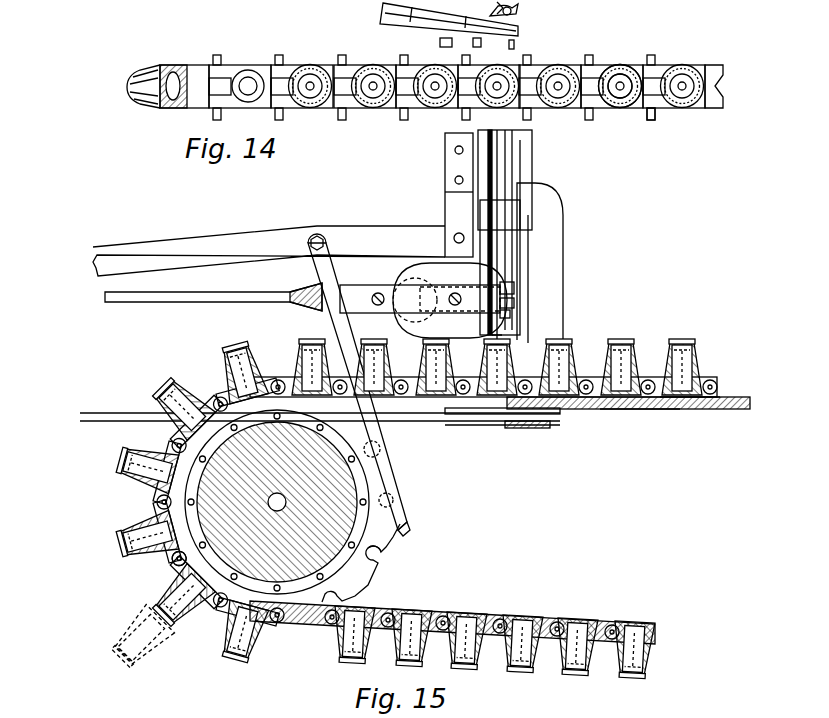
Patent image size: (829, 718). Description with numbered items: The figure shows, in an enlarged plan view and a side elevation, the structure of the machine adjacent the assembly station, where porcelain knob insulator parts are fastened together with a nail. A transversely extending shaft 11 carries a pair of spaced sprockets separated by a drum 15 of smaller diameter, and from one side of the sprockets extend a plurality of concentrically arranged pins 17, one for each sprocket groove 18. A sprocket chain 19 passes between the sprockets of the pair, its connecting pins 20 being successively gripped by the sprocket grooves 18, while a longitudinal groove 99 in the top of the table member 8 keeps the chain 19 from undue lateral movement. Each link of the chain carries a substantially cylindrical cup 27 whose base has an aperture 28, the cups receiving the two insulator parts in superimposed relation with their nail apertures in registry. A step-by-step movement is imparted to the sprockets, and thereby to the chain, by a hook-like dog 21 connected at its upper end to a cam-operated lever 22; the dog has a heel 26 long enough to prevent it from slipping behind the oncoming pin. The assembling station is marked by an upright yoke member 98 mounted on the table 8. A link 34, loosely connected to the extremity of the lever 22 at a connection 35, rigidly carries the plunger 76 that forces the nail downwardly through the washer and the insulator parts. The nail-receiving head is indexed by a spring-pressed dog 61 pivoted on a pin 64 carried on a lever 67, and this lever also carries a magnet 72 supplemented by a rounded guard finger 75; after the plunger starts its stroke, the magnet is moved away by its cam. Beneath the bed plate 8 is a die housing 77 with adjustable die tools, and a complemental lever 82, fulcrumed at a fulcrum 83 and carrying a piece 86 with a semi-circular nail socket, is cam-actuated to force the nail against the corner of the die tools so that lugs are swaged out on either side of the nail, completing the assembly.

In FIG. 15, the table member 8 is at (636, 409).
In FIG. 15, the shaft 11 is at (283, 501).
In FIG. 15, the drum 15 is at (365, 446).
In FIG. 15, the pins 17 is at (360, 540).
In FIG. 15, the sprocket grooves 18 is at (376, 557).
In FIG. 14, the sprocket chain 19 is at (606, 108).
In FIG. 15, the sprocket chain 19 is at (712, 375).
In FIG. 14, the connecting pins 20 is at (650, 120).
In FIG. 15, the connecting pins 20 is at (452, 608).
In FIG. 15, the hook-like dog 21 is at (375, 468).
In FIG. 15, the lever 22 is at (247, 240).
In FIG. 15, the heel 26 is at (402, 524).
In FIG. 14, the cup 27 is at (682, 86).
In FIG. 14, the aperture 28 is at (620, 86).
In FIG. 15, the aperture 28 is at (685, 403).
In FIG. 15, the link 34 is at (458, 163).
In FIG. 15, the loose connection 35 is at (456, 236).
In FIG. 14, the spring-pressed dog 61 is at (520, 10).
In FIG. 14, the pin 64 is at (515, 14).
In FIG. 15, the lever 67 is at (180, 297).
In FIG. 14, the magnet 72 is at (500, 30).
In FIG. 15, the magnet 72 is at (518, 283).
In FIG. 14, the guard finger 75 is at (512, 45).
In FIG. 15, the guard finger 75 is at (520, 302).
In FIG. 15, the plunger 76 is at (510, 186).
In FIG. 15, the die housing 77 is at (510, 420).
In FIG. 15, the lever 82 is at (460, 422).
In FIG. 15, the fulcrum 83 is at (540, 421).
In FIG. 15, the piece 86 is at (487, 416).
In FIG. 15, the yoke member 98 is at (553, 238).
In FIG. 15, the longitudinal groove 99 is at (732, 396).